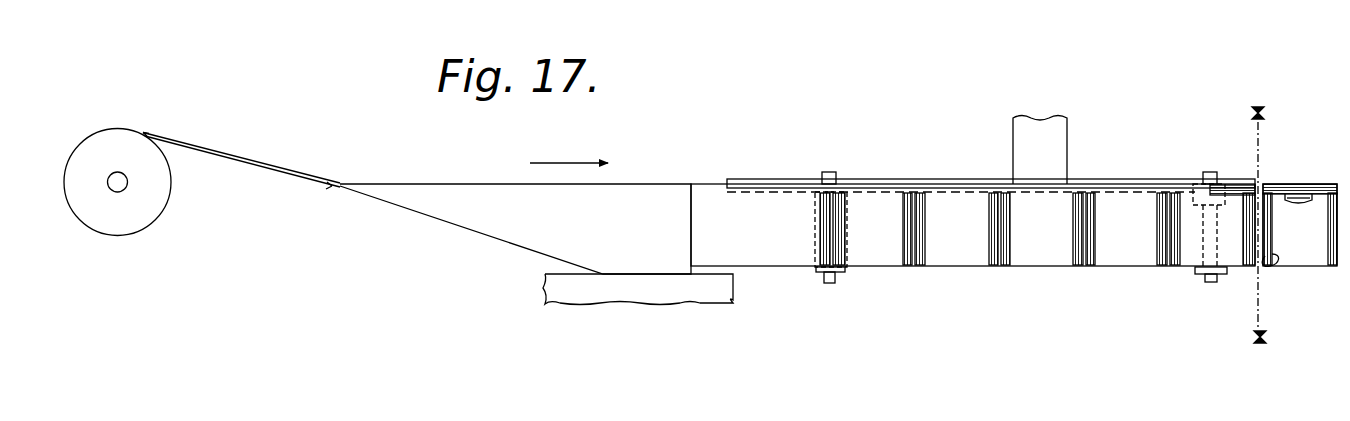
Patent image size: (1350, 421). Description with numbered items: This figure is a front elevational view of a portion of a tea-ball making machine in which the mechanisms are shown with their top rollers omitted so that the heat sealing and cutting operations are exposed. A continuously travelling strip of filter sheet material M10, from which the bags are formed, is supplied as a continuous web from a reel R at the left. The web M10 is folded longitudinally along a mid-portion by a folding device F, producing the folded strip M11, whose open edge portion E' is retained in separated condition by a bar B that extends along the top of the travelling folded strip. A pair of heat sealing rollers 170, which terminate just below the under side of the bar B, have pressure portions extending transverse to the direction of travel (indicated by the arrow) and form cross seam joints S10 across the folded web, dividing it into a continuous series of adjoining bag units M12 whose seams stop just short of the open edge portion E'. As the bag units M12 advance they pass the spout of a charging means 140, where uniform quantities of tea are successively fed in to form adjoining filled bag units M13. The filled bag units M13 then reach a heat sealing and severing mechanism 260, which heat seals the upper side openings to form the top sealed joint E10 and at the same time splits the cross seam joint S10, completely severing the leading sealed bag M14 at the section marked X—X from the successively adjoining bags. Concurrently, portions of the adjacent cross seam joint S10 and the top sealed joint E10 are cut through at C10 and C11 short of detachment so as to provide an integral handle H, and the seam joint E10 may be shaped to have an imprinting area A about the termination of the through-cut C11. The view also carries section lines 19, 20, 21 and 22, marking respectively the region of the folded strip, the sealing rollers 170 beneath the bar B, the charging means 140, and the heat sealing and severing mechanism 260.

The reel R is at (116, 220).
The strip of filter sheet material M10 is at (249, 160).
The folded strip M11 is at (716, 228).
The folding device F is at (537, 228).
The bar B is at (757, 180).
The open edge portion E' is at (961, 169).
The heat sealing rollers 170 is at (835, 272).
The cross seam joint S10 is at (920, 193).
The bag unit M12 is at (885, 249).
The charging means 140 is at (1026, 138).
The filled bag unit M13 is at (1050, 250).
The heat sealing and severing mechanism 260 is at (1199, 174).
The through-cut C10 is at (1259, 250).
The handle H is at (1264, 255).
The through-cut C11 is at (1288, 186).
The top sealed joint E10 is at (1320, 184).
The imprinting area A is at (1303, 206).
The sealed bag M14 is at (1311, 247).
The section line 19- 19 is at (746, 125).
The section line 20- 20 is at (829, 150).
The section line 21- 21 is at (1040, 103).
The section line 22- 22 is at (1210, 125).